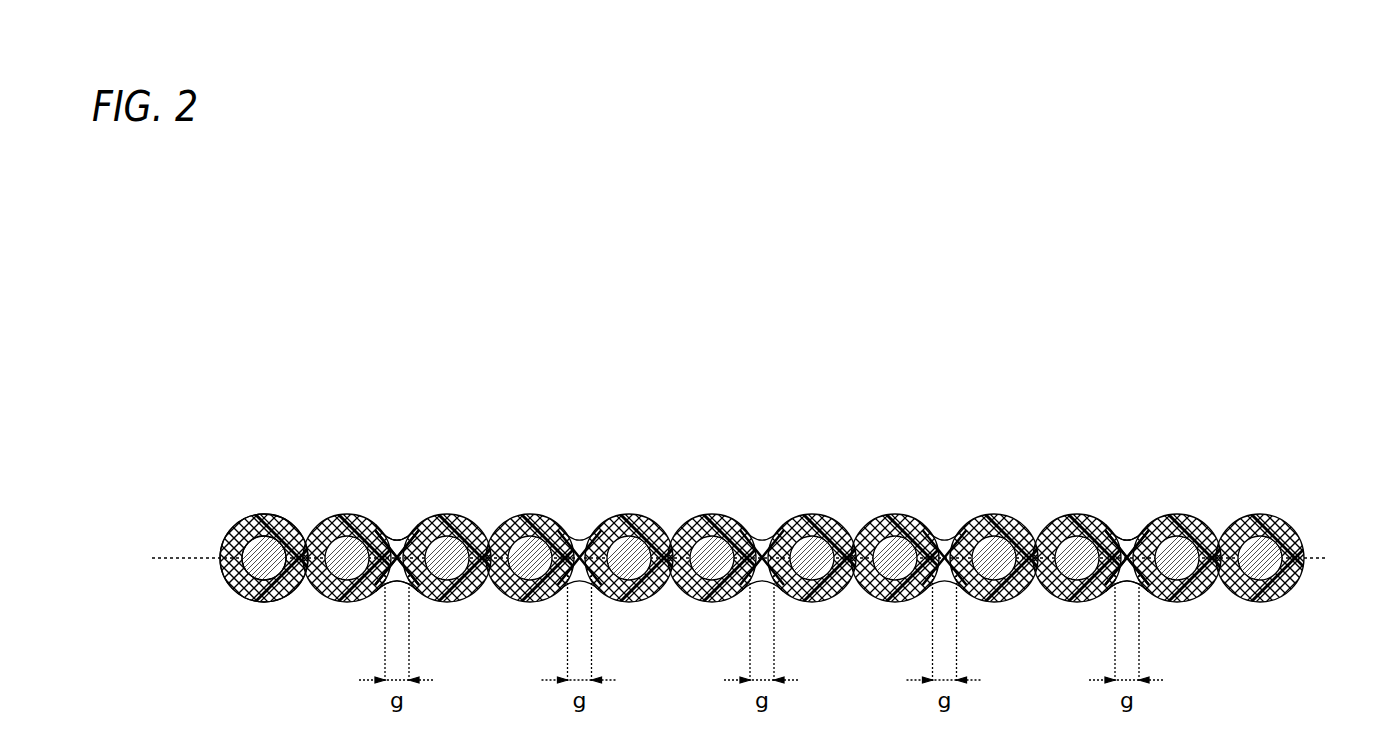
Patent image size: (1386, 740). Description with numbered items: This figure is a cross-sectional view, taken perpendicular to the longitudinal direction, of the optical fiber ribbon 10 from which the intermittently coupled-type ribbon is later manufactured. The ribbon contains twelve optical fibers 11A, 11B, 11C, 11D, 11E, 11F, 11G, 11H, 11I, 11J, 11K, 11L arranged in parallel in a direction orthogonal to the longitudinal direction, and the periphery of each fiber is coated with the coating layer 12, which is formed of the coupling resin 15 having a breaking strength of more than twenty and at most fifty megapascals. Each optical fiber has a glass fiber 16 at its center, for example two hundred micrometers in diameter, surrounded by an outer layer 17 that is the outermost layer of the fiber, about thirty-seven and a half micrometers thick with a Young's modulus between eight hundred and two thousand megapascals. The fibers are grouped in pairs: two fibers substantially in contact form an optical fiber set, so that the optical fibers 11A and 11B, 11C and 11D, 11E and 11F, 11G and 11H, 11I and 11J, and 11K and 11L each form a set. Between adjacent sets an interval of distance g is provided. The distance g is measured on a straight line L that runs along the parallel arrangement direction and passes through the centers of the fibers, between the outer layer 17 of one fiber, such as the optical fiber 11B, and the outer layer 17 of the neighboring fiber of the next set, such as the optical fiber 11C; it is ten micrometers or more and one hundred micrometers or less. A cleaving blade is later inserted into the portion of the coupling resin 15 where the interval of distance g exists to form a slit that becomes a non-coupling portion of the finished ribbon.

The optical fiber ribbon 10 is at (859, 348).
The optical fiber 11A is at (259, 500).
The optical fiber 11B is at (338, 500).
The optical fiber 11C is at (441, 500).
The optical fiber 11D is at (520, 500).
The optical fiber 11E is at (624, 500).
The optical fiber 11F is at (701, 500).
The optical fiber 11G is at (806, 500).
The optical fiber 11H is at (883, 500).
The optical fiber 11I is at (988, 500).
The optical fiber 11J is at (1065, 500).
The optical fiber 11K is at (1170, 500).
The optical fiber 11L is at (1248, 500).
The coating layer 12 is at (222, 548).
The coupling resin 15 is at (762, 557).
The glass fiber 16 is at (256, 600).
The outer layer 17 is at (222, 572).
The straight line L is at (749, 560).
The distance g is at (762, 644).